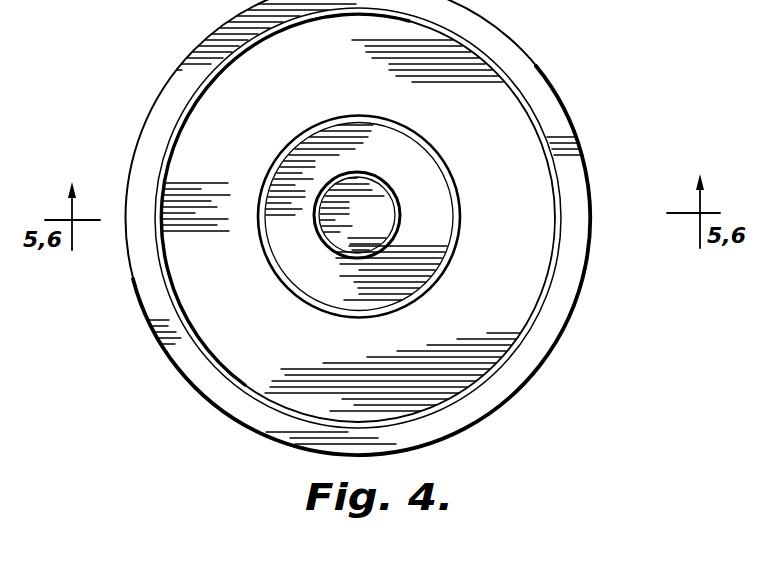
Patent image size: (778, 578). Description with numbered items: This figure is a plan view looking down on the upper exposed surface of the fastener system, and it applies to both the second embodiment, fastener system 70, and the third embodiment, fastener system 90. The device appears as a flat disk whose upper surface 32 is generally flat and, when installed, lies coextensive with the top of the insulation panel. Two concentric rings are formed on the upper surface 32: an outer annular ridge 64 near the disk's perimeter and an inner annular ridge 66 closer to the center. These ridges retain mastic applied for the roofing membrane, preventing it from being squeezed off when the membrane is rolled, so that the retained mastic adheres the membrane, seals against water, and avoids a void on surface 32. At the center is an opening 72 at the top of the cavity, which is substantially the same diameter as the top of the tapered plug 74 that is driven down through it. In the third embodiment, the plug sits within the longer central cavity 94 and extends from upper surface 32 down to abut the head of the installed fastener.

The upper surface 32 is at (519, 212).
The outer annular ridge 64 is at (561, 227).
The inner annular ridge 66 is at (447, 162).
The fastener system 70 is at (352, 233).
The fastener system 90 is at (206, 408).
The opening 72 is at (340, 256).
The tapered plug 74 is at (504, 241).
The central cavity 94 is at (390, 237).